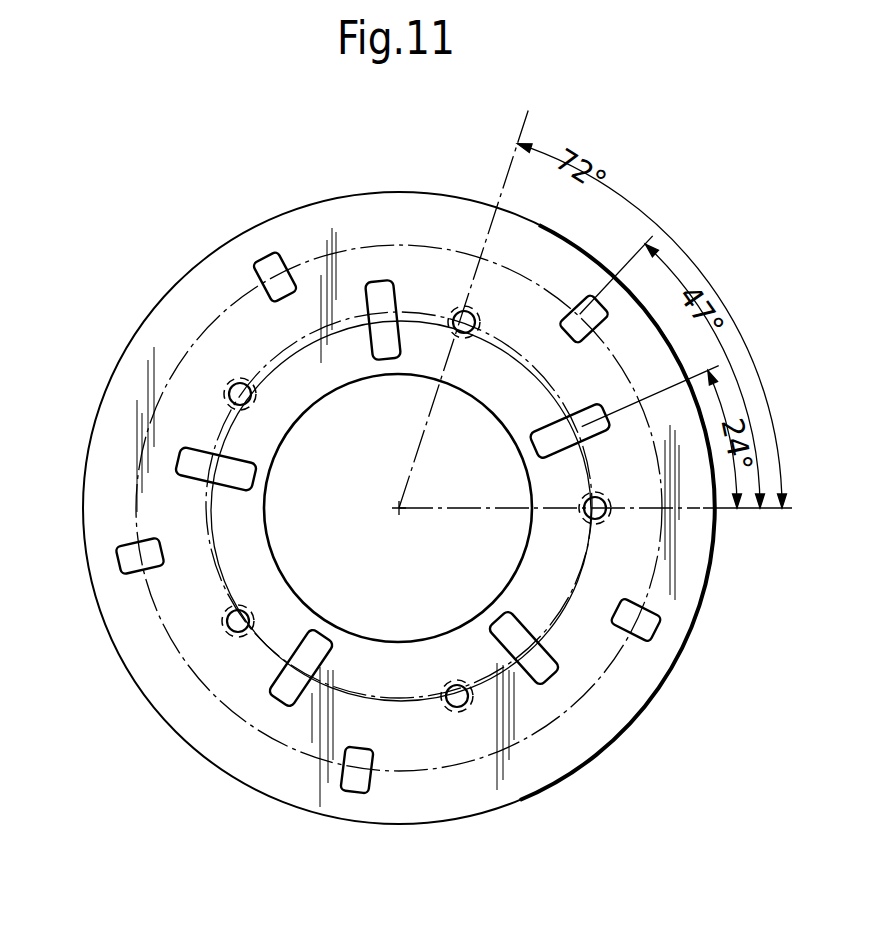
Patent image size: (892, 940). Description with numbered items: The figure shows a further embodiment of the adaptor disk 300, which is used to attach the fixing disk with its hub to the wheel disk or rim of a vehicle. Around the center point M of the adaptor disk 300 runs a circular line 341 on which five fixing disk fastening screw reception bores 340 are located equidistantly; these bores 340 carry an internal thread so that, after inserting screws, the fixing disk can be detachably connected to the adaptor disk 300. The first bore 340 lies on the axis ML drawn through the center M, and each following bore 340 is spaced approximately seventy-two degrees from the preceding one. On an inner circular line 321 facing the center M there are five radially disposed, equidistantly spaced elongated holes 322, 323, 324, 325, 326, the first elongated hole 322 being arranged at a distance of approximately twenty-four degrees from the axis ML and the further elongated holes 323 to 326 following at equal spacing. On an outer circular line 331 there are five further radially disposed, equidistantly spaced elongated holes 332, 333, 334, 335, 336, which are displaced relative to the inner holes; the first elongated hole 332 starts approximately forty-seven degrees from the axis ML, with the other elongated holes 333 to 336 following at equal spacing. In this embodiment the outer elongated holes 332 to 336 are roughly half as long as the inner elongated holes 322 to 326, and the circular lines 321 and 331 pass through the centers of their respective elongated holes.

The adaptor disk 300 is at (175, 788).
The inner circular line 321 is at (360, 692).
The elongated hole 322 is at (503, 460).
The elongated hole 323 is at (383, 282).
The elongated hole 324 is at (183, 450).
The elongated hole 325 is at (282, 687).
The elongated hole 326 is at (548, 665).
The outer circular line 331 is at (445, 770).
The elongated hole 332 is at (520, 390).
The elongated hole 333 is at (273, 250).
The elongated hole 334 is at (123, 550).
The elongated hole 335 is at (355, 782).
The elongated hole 336 is at (653, 633).
The fixing disk fastening screw reception bore 340 is at (465, 311).
The circular line 341 is at (208, 487).
The center point M is at (399, 508).
The axis ML is at (747, 513).